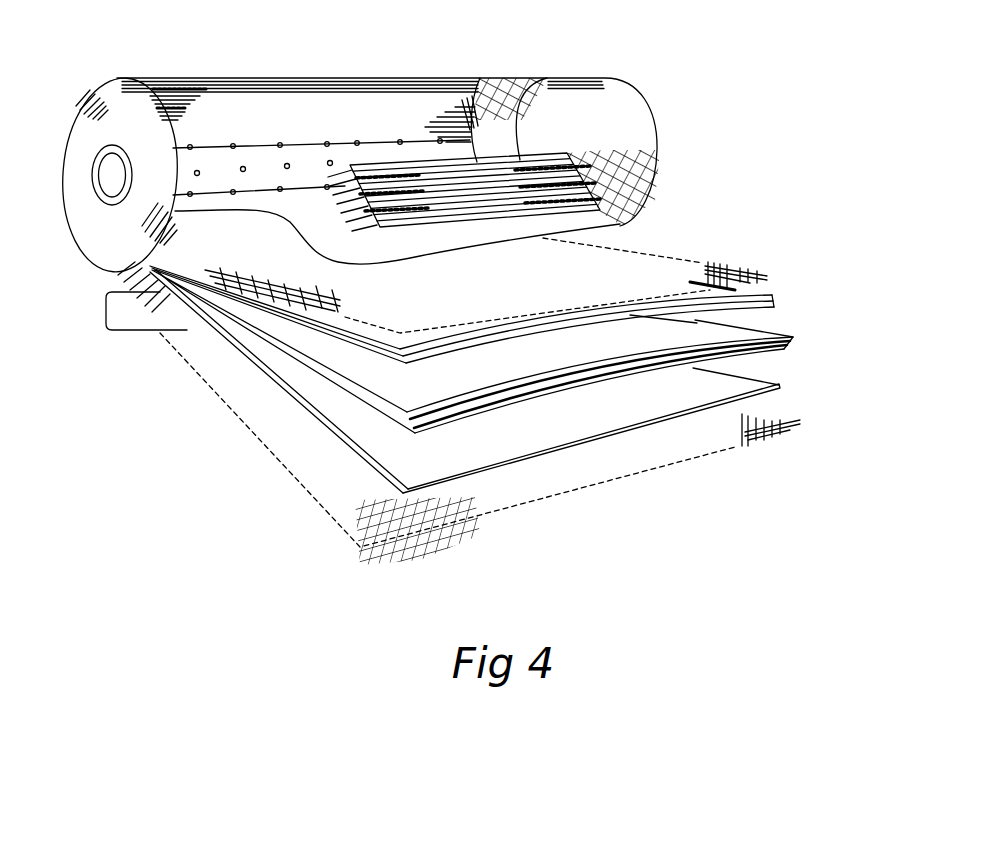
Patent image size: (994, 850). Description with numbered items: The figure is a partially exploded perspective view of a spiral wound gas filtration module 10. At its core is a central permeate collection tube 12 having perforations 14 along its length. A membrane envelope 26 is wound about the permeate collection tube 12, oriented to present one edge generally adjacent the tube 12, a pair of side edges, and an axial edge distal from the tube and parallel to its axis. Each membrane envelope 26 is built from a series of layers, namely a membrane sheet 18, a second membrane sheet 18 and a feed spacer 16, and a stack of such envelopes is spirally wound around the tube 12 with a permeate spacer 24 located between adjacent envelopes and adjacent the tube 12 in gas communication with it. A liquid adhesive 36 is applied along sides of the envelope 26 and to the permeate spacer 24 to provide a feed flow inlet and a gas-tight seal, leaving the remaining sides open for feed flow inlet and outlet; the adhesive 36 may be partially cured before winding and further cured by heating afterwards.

The spiral wound gas filtration module 10 is at (538, 70).
The central permeate collection tube 12 is at (216, 157).
The perforations 14 is at (288, 168).
The feed spacer 16 is at (568, 350).
The membrane sheet 18 is at (760, 295).
The permeate spacer 24 is at (737, 267).
The membrane envelope 26 is at (105, 310).
The liquid adhesive 36 is at (643, 303).